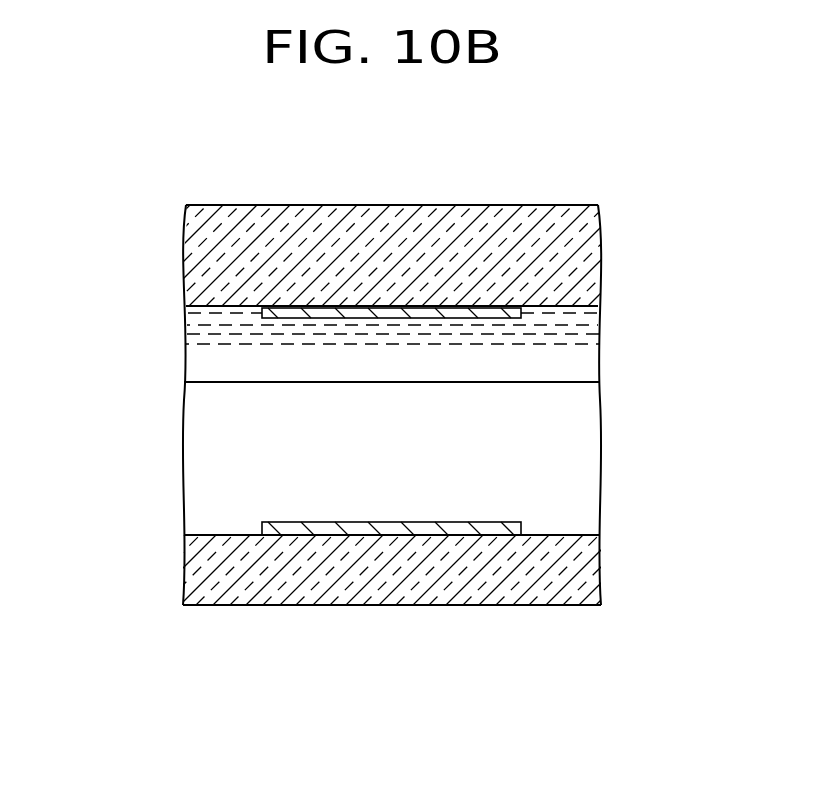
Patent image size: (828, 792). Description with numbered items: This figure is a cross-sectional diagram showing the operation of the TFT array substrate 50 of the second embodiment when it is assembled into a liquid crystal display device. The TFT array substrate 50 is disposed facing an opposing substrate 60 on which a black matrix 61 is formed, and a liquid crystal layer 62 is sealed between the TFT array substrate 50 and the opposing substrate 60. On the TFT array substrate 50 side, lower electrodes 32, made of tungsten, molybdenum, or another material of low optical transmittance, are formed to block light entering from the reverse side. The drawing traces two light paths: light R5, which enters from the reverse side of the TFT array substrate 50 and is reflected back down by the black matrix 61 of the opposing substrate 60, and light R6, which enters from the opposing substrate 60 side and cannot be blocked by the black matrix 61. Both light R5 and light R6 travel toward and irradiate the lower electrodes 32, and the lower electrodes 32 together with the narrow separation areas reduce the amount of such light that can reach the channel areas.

The opposing substrate 60 is at (631, 205).
The black matrix 61 is at (416, 313).
The liquid crystal layer 62 is at (575, 353).
The TFT array substrate 50 is at (631, 388).
The lower electrode 32 is at (409, 535).
The light R6 is at (270, 521).
The light R5 is at (507, 322).